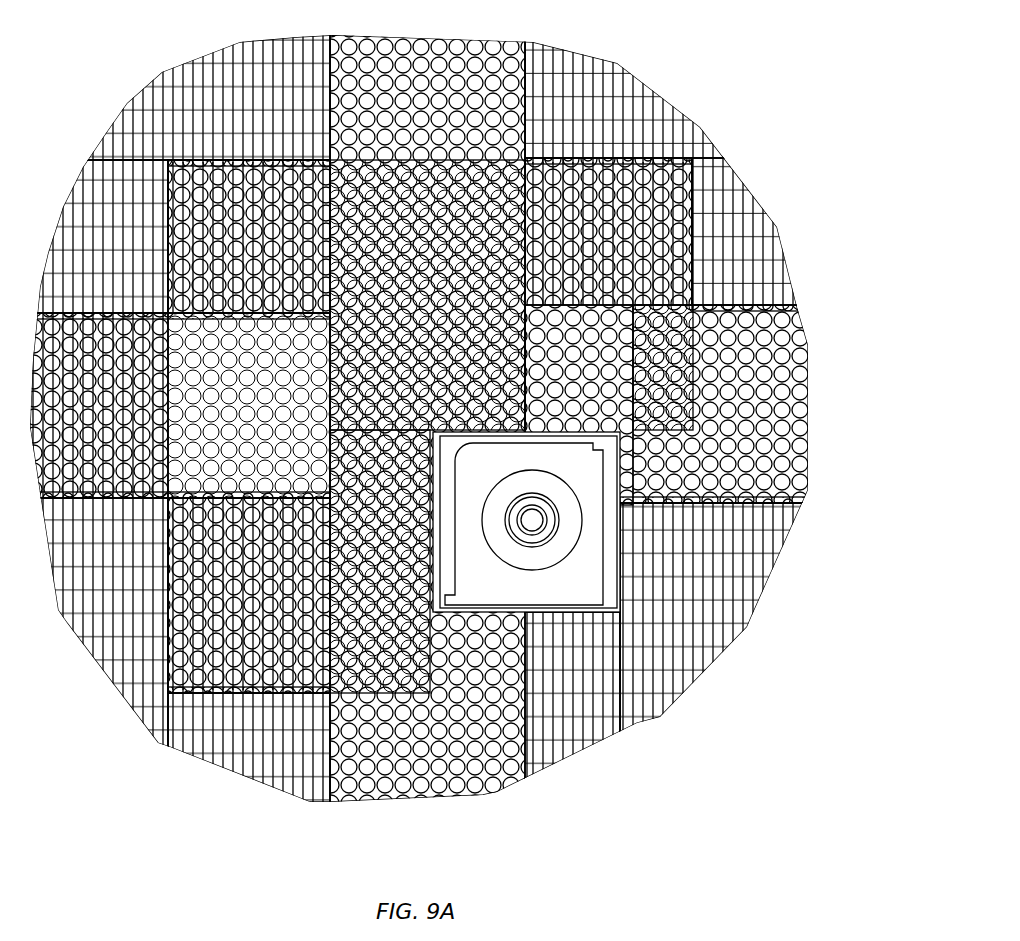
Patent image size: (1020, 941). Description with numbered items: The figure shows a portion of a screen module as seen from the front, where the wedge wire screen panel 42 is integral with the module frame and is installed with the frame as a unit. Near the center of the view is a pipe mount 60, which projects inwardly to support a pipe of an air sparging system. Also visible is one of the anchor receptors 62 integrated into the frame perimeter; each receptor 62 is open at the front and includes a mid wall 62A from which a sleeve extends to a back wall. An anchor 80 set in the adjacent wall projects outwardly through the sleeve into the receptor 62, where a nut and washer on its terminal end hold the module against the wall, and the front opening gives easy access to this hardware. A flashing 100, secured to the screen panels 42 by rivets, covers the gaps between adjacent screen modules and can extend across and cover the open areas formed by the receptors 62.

The flashing 100 is at (572, 173).
The screen panel 42 is at (648, 108).
The pipe mount 60 is at (647, 547).
The anchor receptor 62 is at (620, 542).
The mid wall 62A is at (573, 575).
The anchor 80 is at (535, 518).